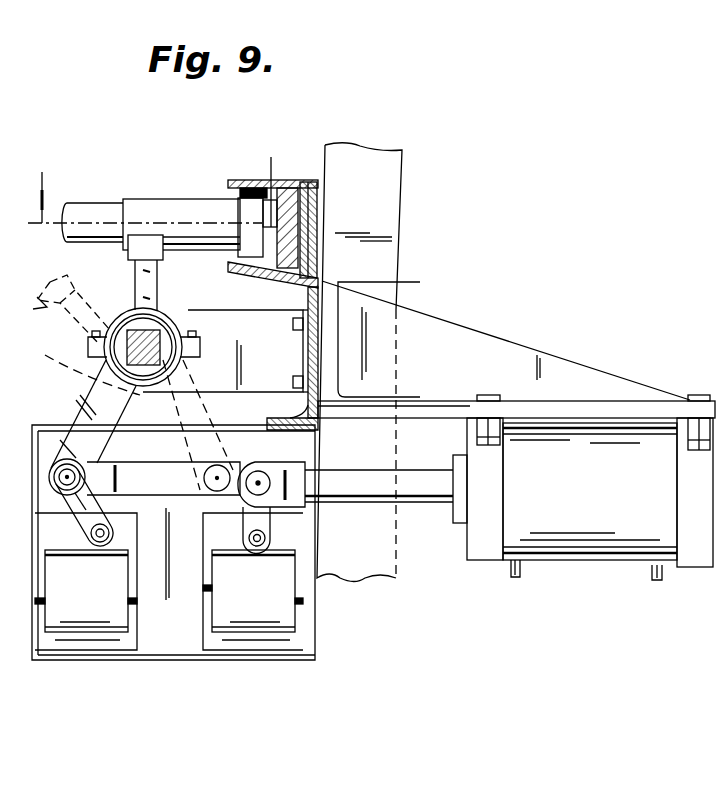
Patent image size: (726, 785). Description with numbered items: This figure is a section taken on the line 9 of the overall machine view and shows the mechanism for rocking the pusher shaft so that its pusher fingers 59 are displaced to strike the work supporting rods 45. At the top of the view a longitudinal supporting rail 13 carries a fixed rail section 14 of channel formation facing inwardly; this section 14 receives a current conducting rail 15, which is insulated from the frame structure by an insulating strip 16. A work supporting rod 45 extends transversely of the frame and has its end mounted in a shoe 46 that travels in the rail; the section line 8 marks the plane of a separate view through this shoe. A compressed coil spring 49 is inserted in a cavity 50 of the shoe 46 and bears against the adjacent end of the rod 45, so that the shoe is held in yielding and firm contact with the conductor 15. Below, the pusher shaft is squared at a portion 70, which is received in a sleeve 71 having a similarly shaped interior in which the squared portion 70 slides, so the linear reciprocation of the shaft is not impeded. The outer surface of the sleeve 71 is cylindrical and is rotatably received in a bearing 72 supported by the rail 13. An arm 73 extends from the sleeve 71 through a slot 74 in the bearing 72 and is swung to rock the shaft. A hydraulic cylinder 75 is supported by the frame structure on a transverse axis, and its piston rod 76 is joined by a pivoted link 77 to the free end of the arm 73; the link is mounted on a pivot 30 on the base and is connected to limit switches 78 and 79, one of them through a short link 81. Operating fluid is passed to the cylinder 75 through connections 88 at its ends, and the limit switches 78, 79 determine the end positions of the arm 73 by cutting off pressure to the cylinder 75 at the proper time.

The section line 8- 8 is at (157, 179).
The section line 9- 9 is at (36, 305).
The longitudinal supporting rail 13 is at (320, 282).
The rail section 14 is at (230, 183).
The current conducting rail 15 is at (288, 180).
The insulating strip 16 is at (310, 180).
The pivot pin on base plate 30 is at (77, 532).
The work supporting rod 45 is at (83, 223).
The shoe 46 is at (153, 215).
The compressed coil spring 49 is at (0, 113).
The cavity 50 is at (0, 88).
The pusher finger 59 is at (137, 280).
The squared portion of shaft 70 is at (157, 327).
The sleeve 71 is at (160, 340).
The bearing 72 is at (187, 333).
The arm 73 is at (118, 443).
The slot 74 is at (125, 417).
The hydraulic cylinder 75 is at (516, 481).
The piston rod 76 is at (422, 497).
The pivoted link 77 is at (163, 478).
The limit switch 78 is at (86, 581).
The limit switch 79 is at (253, 581).
The short link 81 is at (243, 528).
The connection 88 is at (652, 572).